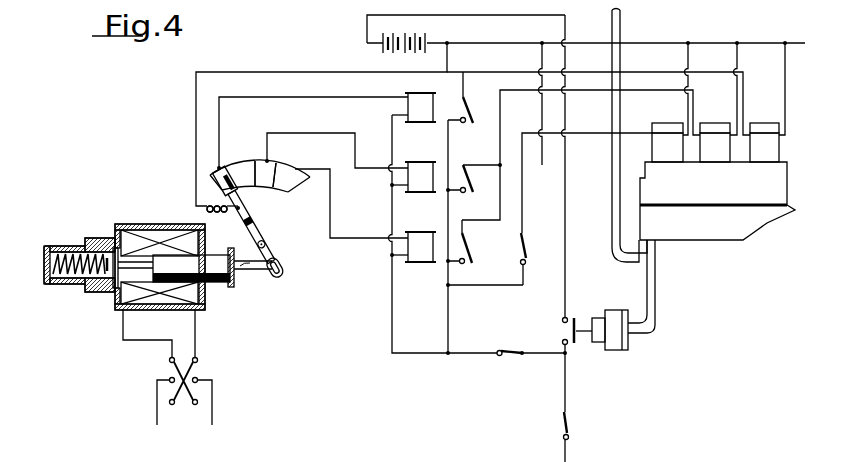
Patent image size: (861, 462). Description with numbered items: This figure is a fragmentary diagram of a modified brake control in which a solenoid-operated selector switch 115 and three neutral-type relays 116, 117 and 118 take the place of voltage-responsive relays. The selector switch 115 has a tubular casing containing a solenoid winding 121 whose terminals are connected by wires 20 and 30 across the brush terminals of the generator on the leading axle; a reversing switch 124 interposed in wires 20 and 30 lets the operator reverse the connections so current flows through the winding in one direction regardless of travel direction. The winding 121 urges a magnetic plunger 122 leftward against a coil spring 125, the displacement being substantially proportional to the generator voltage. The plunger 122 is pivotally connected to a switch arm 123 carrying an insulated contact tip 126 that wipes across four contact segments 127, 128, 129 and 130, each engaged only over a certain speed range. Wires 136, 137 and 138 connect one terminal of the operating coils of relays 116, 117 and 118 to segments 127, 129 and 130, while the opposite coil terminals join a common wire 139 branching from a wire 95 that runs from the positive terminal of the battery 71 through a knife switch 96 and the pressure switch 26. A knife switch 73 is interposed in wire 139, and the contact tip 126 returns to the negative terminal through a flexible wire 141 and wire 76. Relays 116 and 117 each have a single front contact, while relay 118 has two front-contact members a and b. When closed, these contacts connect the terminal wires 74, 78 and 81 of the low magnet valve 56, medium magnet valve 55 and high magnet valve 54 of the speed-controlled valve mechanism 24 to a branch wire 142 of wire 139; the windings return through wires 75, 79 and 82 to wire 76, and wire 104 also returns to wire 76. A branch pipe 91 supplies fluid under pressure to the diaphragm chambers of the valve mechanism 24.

The wire 20 is at (157, 410).
The wire 30 is at (212, 410).
The speed-controlled valve mechanism 24 is at (788, 190).
The pressure switch 26 is at (609, 309).
The high magnet valve 54 is at (677, 121).
The medium magnet valve 55 is at (725, 121).
The low magnet valve 56 is at (775, 121).
The battery 71 is at (414, 33).
The knife switch 73 is at (511, 351).
The wire 74 is at (472, 79).
The wire 75 is at (784, 60).
The wire 76 is at (646, 43).
The wire 78 is at (511, 97).
The wire 79 is at (736, 60).
The wire 81 is at (523, 193).
The wire 82 is at (686, 60).
The branch pipe 91 is at (611, 22).
The branch wire 95 is at (566, 193).
The knife switch 96 is at (562, 421).
The wire 104 is at (540, 60).
The solenoid-operated selector switch 115 is at (96, 236).
The relay 116 is at (420, 88).
The relay 117 is at (425, 145).
The relay 118 is at (425, 229).
The solenoid winding 121 is at (157, 232).
The plunger 122 is at (200, 290).
The switch arm 123 is at (254, 230).
The reversing switch 124 is at (167, 372).
The coil spring 125 is at (63, 278).
The contact tip 126 is at (238, 191).
The contact segment 127 is at (212, 173).
The contact segment 128 is at (245, 165).
The contact segment 129 is at (272, 167).
The contact segment 130 is at (287, 194).
The wire 136 is at (330, 86).
The wire 137 is at (349, 123).
The wire 138 is at (369, 236).
The common wire 139 is at (391, 318).
The wire 141 is at (311, 59).
The branch wire 142 is at (447, 318).
The front-contact member a is at (532, 250).
The front-contact member b is at (474, 250).